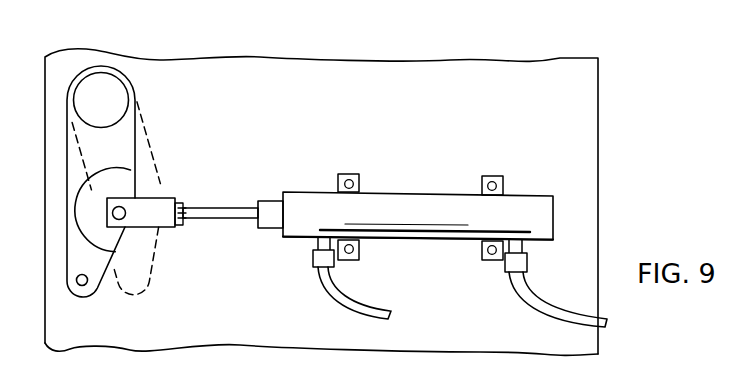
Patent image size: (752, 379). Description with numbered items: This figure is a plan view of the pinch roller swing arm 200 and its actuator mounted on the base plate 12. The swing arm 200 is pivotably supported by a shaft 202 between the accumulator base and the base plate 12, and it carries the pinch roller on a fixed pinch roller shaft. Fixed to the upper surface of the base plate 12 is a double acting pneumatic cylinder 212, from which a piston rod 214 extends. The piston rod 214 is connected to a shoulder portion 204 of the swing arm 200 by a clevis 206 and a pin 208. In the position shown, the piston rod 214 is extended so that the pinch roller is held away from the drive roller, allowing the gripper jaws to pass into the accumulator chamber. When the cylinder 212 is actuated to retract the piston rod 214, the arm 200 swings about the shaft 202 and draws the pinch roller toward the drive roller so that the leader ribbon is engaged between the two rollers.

The base plate 12 is at (566, 92).
The pinch roller swing arm 200 is at (125, 118).
The shaft 202 is at (105, 80).
The shoulder portion 204 is at (128, 188).
The clevis 206 is at (158, 198).
The pin 208 is at (125, 218).
The double acting pneumatic cylinder 212 is at (412, 193).
The piston rod 214 is at (223, 209).